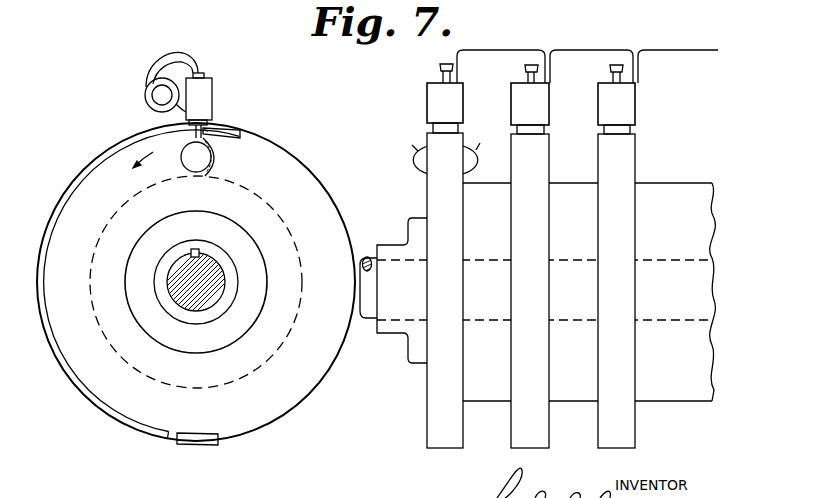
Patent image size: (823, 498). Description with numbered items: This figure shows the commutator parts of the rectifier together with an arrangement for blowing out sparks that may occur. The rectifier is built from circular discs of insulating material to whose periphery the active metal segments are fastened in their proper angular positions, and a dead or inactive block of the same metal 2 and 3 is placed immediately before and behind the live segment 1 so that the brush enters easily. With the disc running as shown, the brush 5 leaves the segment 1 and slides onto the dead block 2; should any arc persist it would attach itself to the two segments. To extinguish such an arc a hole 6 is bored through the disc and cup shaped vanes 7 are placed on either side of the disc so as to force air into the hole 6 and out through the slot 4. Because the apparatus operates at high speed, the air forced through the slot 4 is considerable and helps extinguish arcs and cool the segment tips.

The segment 1 is at (122, 132).
The dead block 2 is at (241, 134).
The dead block 3 is at (201, 440).
The slot 4 is at (206, 131).
The brush 5 is at (204, 75).
The hole 6 is at (196, 157).
The cup shaped vanes 7 is at (218, 157).